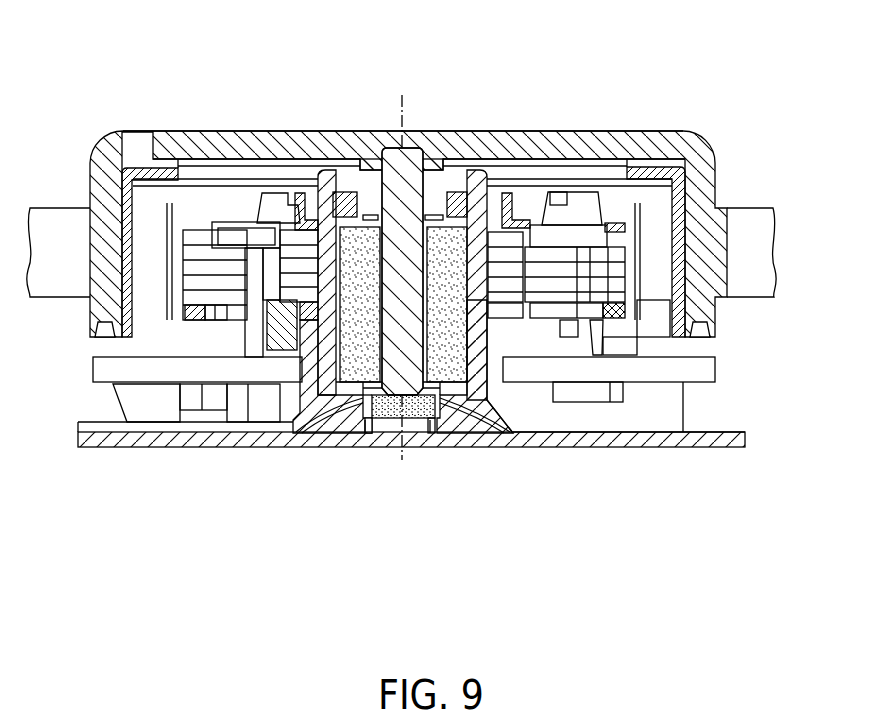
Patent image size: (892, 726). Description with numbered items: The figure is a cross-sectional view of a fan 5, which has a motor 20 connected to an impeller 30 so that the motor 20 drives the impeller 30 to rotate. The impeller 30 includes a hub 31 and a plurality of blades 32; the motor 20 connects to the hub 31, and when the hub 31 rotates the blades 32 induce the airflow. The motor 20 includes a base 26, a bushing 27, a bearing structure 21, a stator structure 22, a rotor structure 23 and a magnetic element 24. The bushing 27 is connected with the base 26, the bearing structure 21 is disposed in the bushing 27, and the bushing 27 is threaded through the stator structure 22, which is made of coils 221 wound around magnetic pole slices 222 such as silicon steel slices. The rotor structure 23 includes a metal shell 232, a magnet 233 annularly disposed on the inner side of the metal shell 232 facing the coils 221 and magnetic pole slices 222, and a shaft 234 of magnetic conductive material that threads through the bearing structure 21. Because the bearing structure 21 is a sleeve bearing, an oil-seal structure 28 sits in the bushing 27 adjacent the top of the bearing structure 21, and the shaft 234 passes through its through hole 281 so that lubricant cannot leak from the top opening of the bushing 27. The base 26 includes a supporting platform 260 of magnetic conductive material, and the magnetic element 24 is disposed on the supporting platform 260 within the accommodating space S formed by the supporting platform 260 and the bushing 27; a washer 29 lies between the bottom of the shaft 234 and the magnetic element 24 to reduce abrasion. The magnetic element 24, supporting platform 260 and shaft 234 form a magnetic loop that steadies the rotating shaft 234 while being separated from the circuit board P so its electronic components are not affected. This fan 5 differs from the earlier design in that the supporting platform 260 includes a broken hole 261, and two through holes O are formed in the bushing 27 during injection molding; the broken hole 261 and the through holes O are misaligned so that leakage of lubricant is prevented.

The fan 5 is at (70, 72).
The motor 20 is at (648, 163).
The bearing structure 21 is at (523, 433).
The stator structure 22 is at (609, 415).
The coils 221 is at (575, 300).
The magnetic pole slices 222 is at (625, 307).
The rotor structure 23 is at (403, 201).
The metal shell 232 is at (163, 163).
The magnet 233 is at (160, 227).
The shaft 234 is at (376, 130).
The magnetic element 24 is at (400, 435).
The base 26 is at (177, 447).
The supporting platform 260 is at (413, 420).
The broken hole 261 is at (365, 398).
The bushing 27 is at (300, 433).
The oil-seal structure 28 is at (468, 170).
The through hole 281 is at (462, 205).
The washer 29 is at (370, 398).
The impeller 30 is at (723, 168).
The hub 31 is at (682, 145).
The blades 32 is at (752, 217).
The through holes O is at (370, 447).
The circuit board P is at (92, 380).
The accommodating space S is at (495, 433).